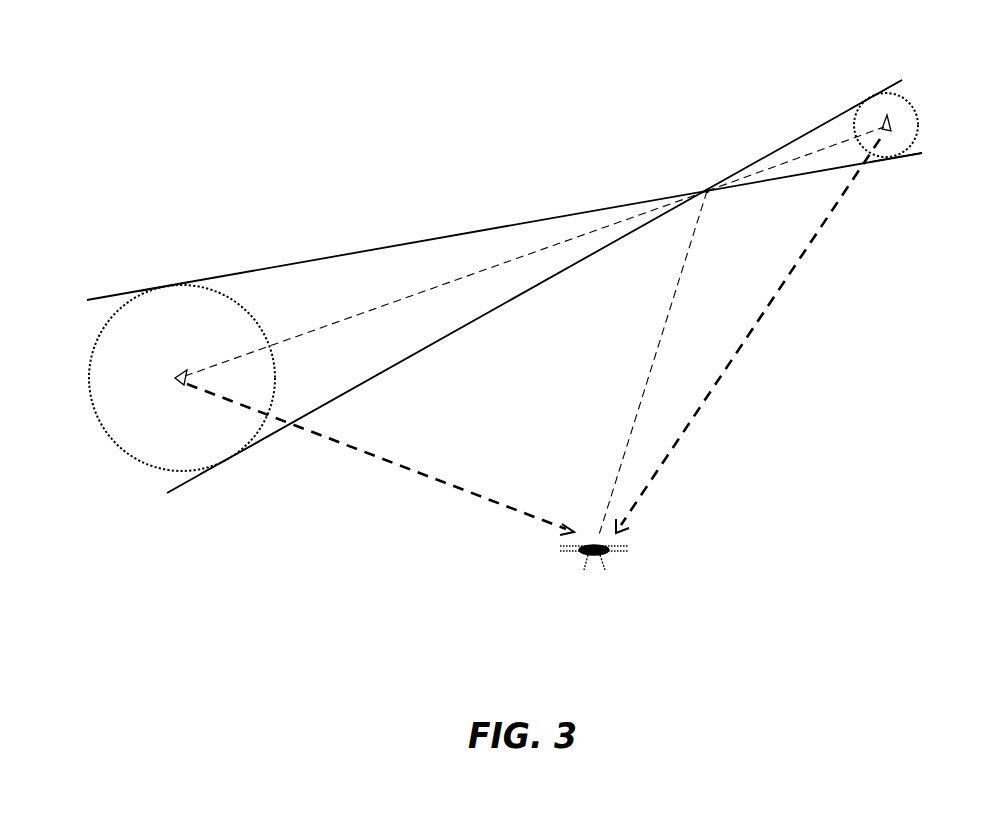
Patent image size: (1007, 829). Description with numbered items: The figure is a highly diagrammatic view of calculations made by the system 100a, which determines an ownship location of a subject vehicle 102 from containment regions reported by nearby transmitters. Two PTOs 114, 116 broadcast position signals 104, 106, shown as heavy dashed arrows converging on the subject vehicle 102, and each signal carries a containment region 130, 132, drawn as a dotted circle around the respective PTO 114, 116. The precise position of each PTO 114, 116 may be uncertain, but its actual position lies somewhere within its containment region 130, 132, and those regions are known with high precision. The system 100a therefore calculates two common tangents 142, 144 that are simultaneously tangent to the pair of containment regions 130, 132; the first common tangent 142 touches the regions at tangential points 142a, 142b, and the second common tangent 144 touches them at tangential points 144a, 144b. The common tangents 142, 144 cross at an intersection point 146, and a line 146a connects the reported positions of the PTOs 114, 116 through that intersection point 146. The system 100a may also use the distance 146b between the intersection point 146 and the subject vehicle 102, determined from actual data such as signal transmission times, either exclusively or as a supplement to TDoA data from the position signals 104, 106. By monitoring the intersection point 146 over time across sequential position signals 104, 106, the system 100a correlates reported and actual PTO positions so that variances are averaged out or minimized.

The system 100a is at (110, 119).
The subject vehicle 102 is at (595, 568).
The position signal 104 is at (413, 473).
The position signal 106 is at (757, 325).
The PTO 114 is at (176, 378).
The PTO 116 is at (893, 122).
The containment region 130 is at (113, 447).
The containment region 132 is at (920, 128).
The common tangent 142 is at (443, 237).
The tangential point 142a is at (164, 284).
The tangential point 142b is at (892, 160).
The common tangent 144 is at (458, 330).
The tangential point 144a is at (228, 463).
The tangential point 144b is at (876, 98).
The intersection point 146 is at (705, 190).
The line 146a is at (372, 312).
The distance 146b is at (656, 346).